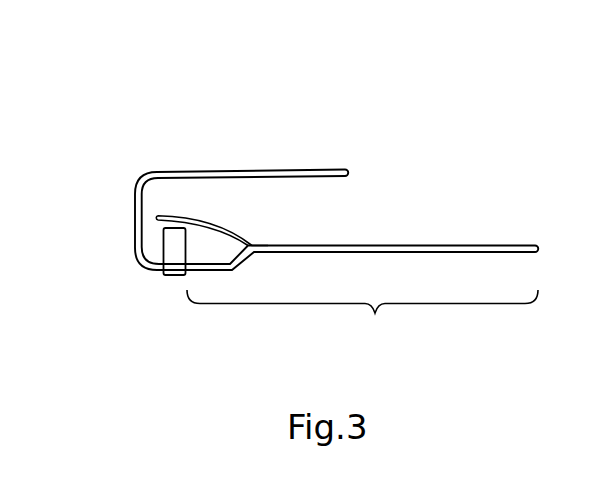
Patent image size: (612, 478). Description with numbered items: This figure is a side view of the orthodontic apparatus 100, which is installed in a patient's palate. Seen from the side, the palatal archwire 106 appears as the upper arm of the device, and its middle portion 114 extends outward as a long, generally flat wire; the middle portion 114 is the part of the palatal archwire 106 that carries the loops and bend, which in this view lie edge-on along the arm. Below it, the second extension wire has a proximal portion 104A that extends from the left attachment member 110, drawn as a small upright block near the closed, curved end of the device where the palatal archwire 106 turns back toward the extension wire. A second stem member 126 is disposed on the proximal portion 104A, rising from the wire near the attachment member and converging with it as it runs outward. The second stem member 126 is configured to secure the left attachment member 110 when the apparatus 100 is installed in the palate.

The orthodontic apparatus 100 is at (417, 98).
The palatal archwire 106 is at (137, 154).
The middle portion 114 is at (360, 165).
The second stem member 126 is at (237, 221).
The left attachment member 110 is at (165, 276).
The proximal portion 104A is at (362, 318).